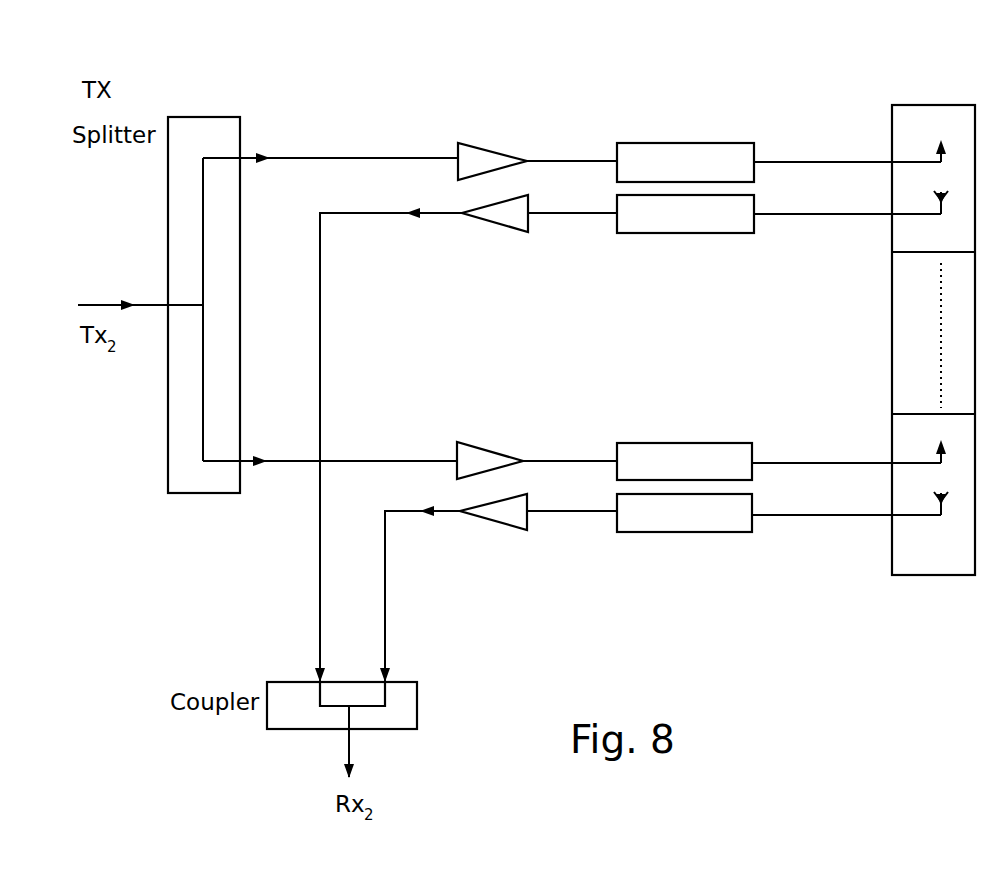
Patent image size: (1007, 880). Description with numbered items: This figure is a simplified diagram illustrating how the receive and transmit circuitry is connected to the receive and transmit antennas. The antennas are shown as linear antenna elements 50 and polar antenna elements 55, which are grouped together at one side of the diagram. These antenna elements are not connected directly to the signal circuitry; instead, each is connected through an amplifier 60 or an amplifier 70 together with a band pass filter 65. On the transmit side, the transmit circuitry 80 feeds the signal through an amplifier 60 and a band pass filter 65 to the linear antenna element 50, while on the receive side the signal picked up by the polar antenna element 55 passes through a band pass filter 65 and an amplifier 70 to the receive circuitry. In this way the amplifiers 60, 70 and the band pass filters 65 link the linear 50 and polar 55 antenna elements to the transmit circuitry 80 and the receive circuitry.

The transmit circuitry 80 is at (197, 127).
The amplifier 60 is at (497, 158).
The amplifier 70 is at (518, 220).
The band pass filter 65 is at (645, 153).
The linear antenna element 50 is at (942, 289).
The polar antenna element 55 is at (942, 340).